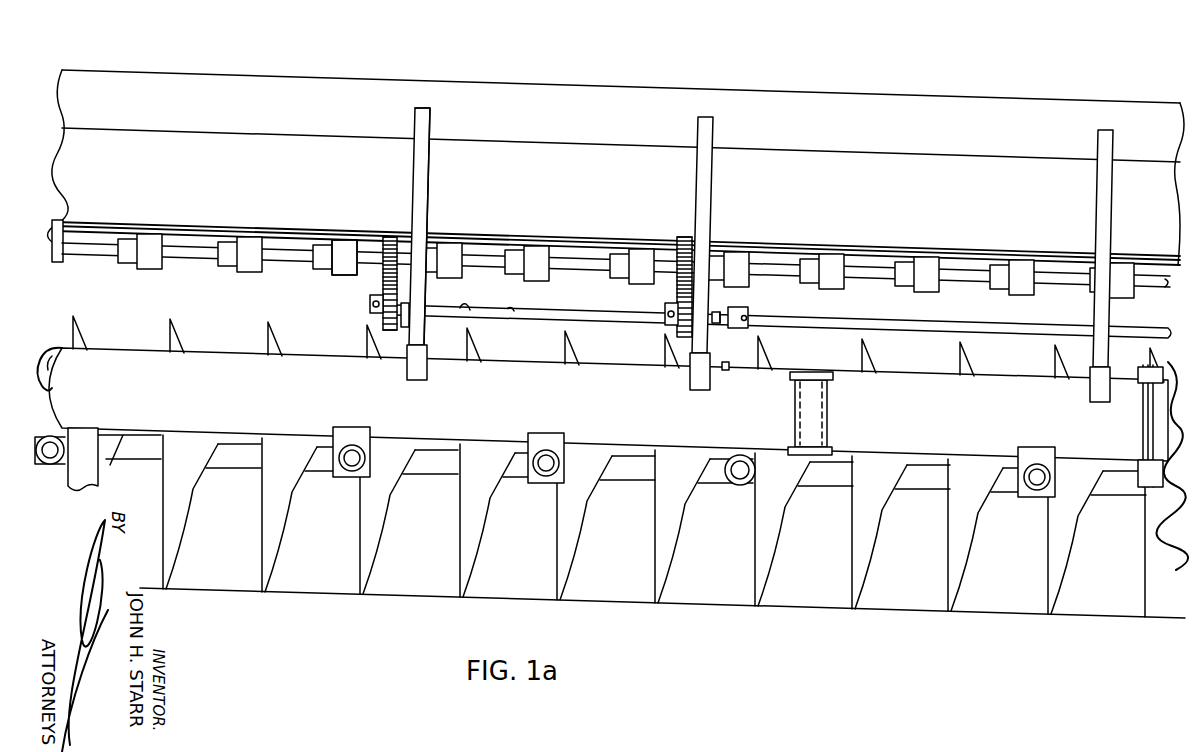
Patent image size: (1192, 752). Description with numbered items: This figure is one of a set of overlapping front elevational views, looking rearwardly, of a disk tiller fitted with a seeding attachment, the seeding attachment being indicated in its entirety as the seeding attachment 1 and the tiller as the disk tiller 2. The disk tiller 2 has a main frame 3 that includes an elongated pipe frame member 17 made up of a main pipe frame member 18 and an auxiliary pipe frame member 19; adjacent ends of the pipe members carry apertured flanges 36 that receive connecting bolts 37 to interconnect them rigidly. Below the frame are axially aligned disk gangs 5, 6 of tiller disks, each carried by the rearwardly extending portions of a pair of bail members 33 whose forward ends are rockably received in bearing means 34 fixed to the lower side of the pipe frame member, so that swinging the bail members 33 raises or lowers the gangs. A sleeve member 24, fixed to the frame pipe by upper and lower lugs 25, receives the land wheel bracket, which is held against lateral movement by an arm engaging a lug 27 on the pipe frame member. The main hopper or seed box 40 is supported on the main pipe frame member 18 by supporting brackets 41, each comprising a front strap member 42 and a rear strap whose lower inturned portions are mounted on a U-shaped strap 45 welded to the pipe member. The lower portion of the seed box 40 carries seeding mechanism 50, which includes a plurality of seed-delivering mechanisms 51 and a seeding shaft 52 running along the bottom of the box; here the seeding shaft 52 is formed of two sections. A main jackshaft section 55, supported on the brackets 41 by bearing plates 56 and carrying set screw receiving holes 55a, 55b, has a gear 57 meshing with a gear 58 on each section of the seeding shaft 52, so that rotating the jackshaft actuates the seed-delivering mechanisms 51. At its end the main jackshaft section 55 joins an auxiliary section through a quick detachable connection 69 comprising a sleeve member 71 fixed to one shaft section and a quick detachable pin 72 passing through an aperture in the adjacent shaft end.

The seeding attachment 1 is at (829, 61).
The disk tiller 2 is at (894, 646).
The main frame 3 is at (320, 353).
The disk gang 5 is at (269, 588).
The disk gang 6 is at (841, 605).
The elongated pipe frame member 17 is at (133, 349).
The main pipe frame member 18 is at (216, 355).
The auxiliary pipe frame member 19 is at (1168, 372).
The sleeve member 24 is at (800, 416).
The lugs 25 is at (833, 448).
The lug 27 is at (728, 370).
The bail members 33 is at (49, 462).
The bearing means 34 is at (350, 478).
The flanges 36 is at (1145, 420).
The connecting bolts 37 is at (1140, 368).
The main hopper or seed box 40 is at (493, 73).
The supporting brackets 41 is at (429, 176).
The front strap member 42 is at (414, 198).
The strap 45 is at (427, 372).
The seeding mechanism 50 is at (296, 242).
The seed-delivering mechanisms 51 is at (345, 243).
The seeding shaft 52 is at (198, 244).
The main jackshaft section 55 is at (548, 318).
The set screw receiving hole 55a is at (512, 309).
The set screw receiving hole 55b is at (466, 307).
The bearing plates 56 is at (410, 305).
The gear 57 is at (375, 298).
The gear 58 is at (388, 243).
The quick detachable connection 69 is at (759, 307).
The sleeve member 71 is at (737, 330).
The quick detachable pin 72 is at (750, 322).